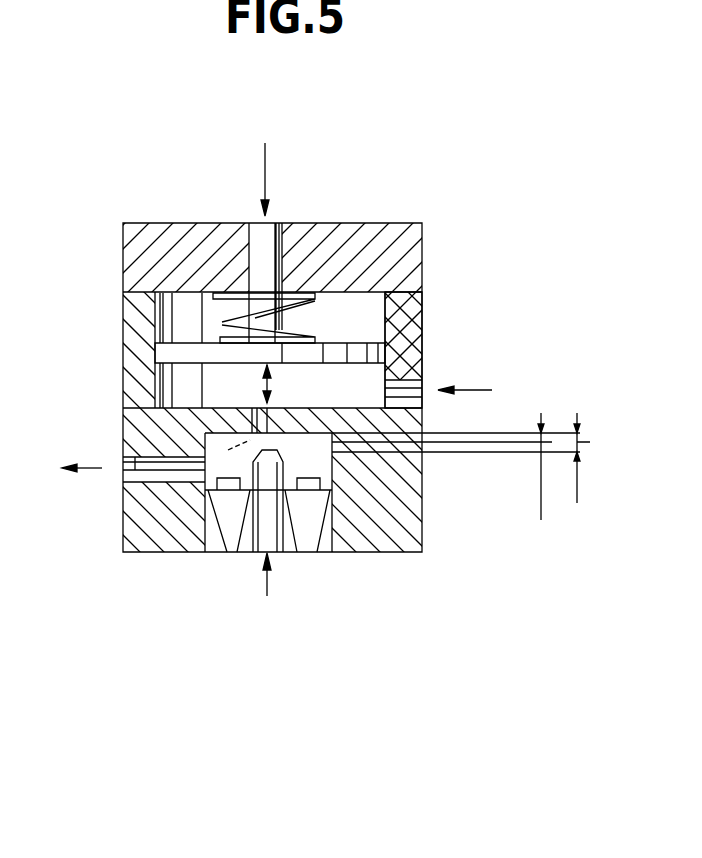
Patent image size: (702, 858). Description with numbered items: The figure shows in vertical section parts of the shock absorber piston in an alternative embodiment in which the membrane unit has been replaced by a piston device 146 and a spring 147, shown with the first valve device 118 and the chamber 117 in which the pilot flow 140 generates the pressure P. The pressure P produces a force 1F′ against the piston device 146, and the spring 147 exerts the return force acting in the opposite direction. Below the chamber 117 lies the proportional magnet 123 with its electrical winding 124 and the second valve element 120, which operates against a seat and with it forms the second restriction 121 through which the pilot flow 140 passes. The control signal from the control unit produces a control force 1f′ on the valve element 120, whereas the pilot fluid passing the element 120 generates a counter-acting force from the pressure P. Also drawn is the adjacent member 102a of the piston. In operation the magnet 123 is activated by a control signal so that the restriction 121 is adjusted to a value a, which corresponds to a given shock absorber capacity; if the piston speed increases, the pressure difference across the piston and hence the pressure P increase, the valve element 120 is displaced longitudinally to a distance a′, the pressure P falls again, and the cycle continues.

The first valve device 118 is at (272, 228).
The spring 147 is at (218, 322).
The chamber 117 is at (167, 365).
The second restriction (throttle valve) 121 is at (281, 404).
The piston device 146 is at (420, 322).
The pilot flow 140 is at (140, 458).
The sliding member 102a is at (245, 412).
The second valve element 120 is at (282, 548).
The electrical winding 124 is at (226, 537).
The proportional magnet 123 is at (325, 553).
The force against the piston device 1F′ is at (264, 374).
The control force for the valve element 1f′ is at (262, 585).
The pressure P is at (422, 408).
The value of the restriction a is at (591, 458).
The displacement distance a′ is at (536, 431).